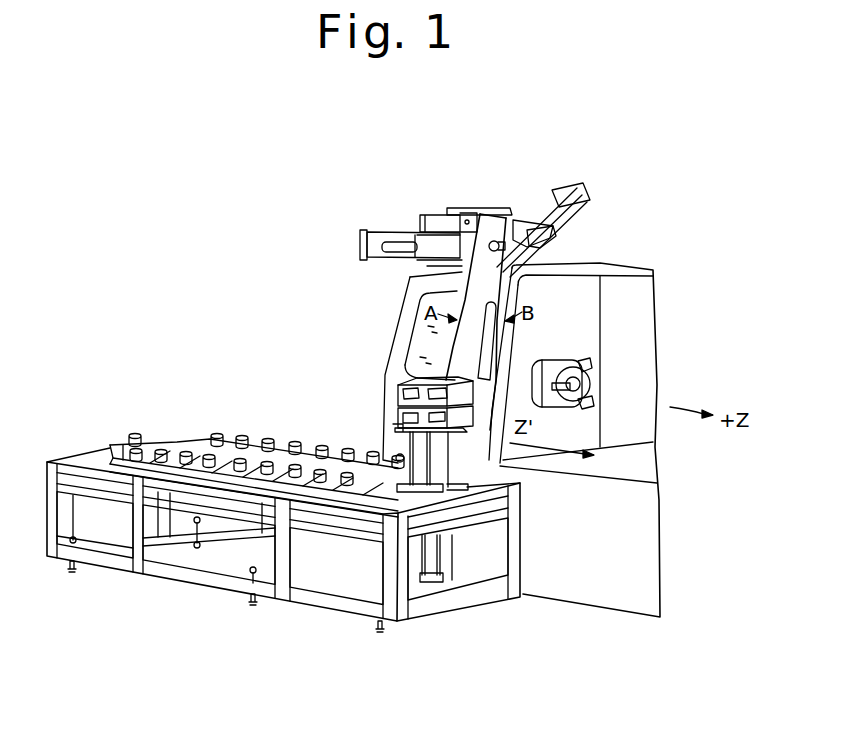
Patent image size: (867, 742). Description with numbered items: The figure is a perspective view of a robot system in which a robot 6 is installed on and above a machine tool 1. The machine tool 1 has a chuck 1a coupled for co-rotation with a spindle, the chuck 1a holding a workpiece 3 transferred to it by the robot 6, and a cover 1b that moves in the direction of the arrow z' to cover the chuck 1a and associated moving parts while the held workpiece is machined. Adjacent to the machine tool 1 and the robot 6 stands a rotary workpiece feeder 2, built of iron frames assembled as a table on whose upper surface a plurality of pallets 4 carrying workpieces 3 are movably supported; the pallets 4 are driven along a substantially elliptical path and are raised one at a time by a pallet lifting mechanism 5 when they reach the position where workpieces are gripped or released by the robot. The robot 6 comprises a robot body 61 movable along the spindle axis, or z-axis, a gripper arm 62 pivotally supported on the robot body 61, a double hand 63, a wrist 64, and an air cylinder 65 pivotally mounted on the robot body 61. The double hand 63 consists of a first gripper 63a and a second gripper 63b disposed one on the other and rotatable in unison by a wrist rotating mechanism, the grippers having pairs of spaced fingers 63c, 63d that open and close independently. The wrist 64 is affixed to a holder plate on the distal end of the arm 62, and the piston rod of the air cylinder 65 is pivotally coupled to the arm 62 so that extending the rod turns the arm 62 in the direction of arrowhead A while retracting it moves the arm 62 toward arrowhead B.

The machine tool 1 is at (627, 519).
The chuck 1a is at (590, 386).
The cover 1b is at (415, 327).
The rotary workpiece feeder 2 is at (403, 595).
The workpiece 3 is at (342, 470).
The pallet 4 is at (332, 490).
The pallet lifting mechanism 5 is at (440, 470).
The robot 6 is at (484, 194).
The robot body 61 is at (428, 247).
The gripper arm 62 is at (430, 280).
The double hand 63 is at (473, 428).
The first gripper 63a is at (430, 381).
The second gripper 63b is at (427, 415).
The fingers of first gripper 63c is at (440, 388).
The fingers of second gripper 63d is at (403, 422).
The wrist 64 is at (478, 384).
The air cylinder 65 is at (553, 218).